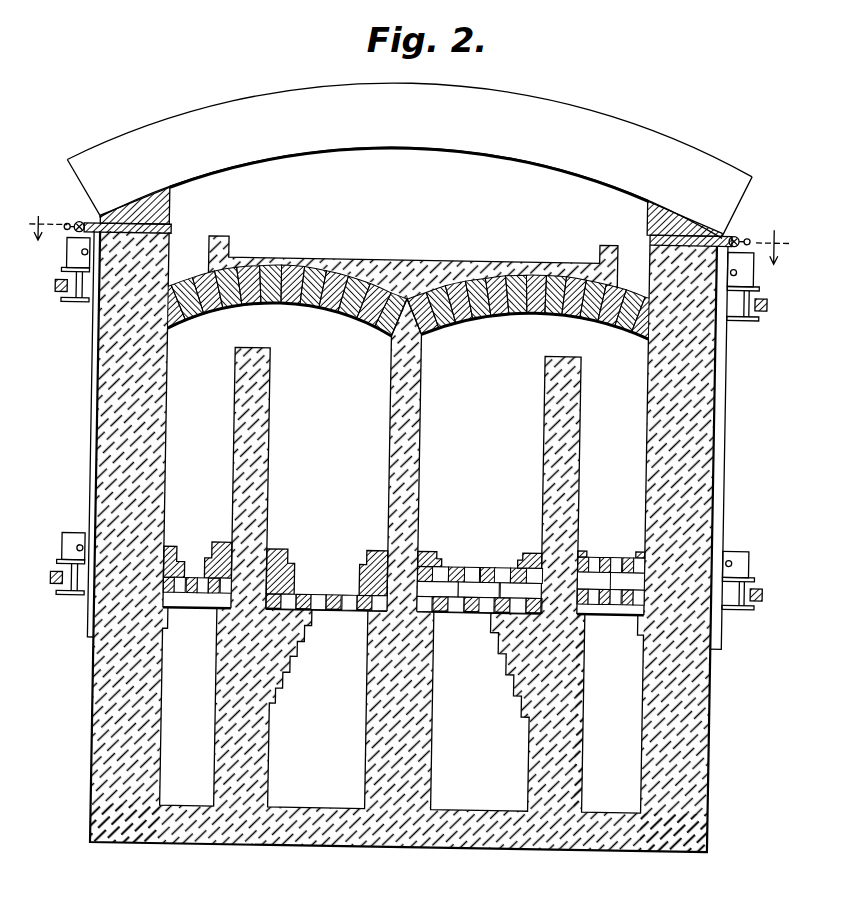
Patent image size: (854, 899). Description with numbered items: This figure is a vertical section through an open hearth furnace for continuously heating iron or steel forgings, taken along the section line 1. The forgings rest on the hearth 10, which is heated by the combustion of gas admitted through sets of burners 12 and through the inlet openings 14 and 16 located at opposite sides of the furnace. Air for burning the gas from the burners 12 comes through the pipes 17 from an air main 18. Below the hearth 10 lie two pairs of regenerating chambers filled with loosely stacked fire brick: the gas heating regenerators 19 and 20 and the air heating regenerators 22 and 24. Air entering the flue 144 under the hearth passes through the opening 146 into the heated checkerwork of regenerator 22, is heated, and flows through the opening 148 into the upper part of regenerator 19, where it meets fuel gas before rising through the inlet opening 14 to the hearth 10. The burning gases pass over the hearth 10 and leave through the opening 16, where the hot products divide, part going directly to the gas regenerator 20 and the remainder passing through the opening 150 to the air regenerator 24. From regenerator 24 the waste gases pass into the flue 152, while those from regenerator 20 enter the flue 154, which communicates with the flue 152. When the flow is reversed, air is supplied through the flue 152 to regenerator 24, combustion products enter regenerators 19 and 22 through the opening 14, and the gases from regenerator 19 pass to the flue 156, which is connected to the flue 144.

The section line of Fig. 1 is at (410, 232).
The hearth 10 is at (385, 222).
The burners 12 is at (92, 222).
The inlet opening 14 is at (187, 325).
The inlet opening 16 is at (618, 313).
The pipes 17 is at (141, 212).
The air main 18 is at (69, 222).
The regenerator 19 is at (197, 559).
The regenerator 20 is at (611, 568).
The regenerator 22 is at (329, 472).
The regenerator 24 is at (480, 557).
The flue 144 is at (294, 791).
The opening 146 is at (319, 621).
The opening 148 is at (251, 330).
The opening 150 is at (544, 339).
The flue 152 is at (449, 799).
The flue 154 is at (597, 796).
The flue 156 is at (178, 793).